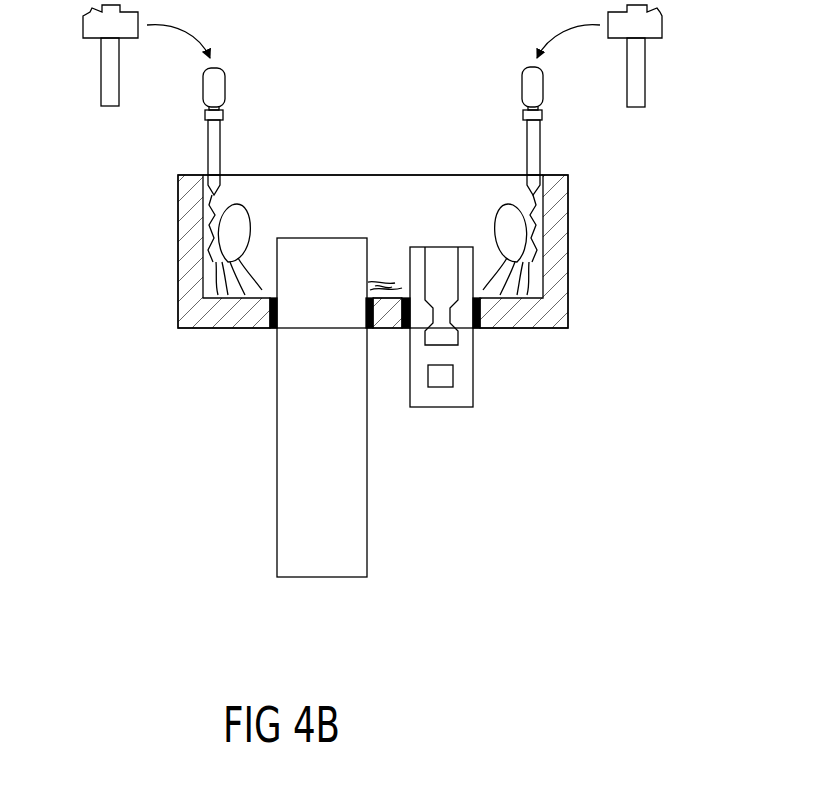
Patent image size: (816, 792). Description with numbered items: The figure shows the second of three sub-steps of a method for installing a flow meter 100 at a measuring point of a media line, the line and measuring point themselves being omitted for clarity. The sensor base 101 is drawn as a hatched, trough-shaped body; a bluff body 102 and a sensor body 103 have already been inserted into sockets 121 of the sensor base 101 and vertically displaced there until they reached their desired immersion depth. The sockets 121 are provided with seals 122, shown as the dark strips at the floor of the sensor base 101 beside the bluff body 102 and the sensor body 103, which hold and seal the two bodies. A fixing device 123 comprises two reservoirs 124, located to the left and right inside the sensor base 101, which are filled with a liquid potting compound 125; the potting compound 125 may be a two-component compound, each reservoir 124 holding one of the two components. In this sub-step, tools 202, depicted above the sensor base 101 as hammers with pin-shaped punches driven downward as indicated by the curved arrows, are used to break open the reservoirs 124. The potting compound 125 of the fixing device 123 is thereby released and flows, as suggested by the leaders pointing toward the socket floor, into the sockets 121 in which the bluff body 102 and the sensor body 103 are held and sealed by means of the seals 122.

The flow meter 100 is at (172, 198).
The sensor base 101 is at (592, 192).
The bluff body 102 is at (275, 532).
The sensor body 103 is at (484, 395).
The sockets 121 is at (269, 340).
The seals 122 is at (404, 333).
The fixing device 123 is at (490, 260).
The reservoirs 124 is at (212, 232).
The potting compound 125 is at (370, 156).
The tools 202 is at (375, 56).